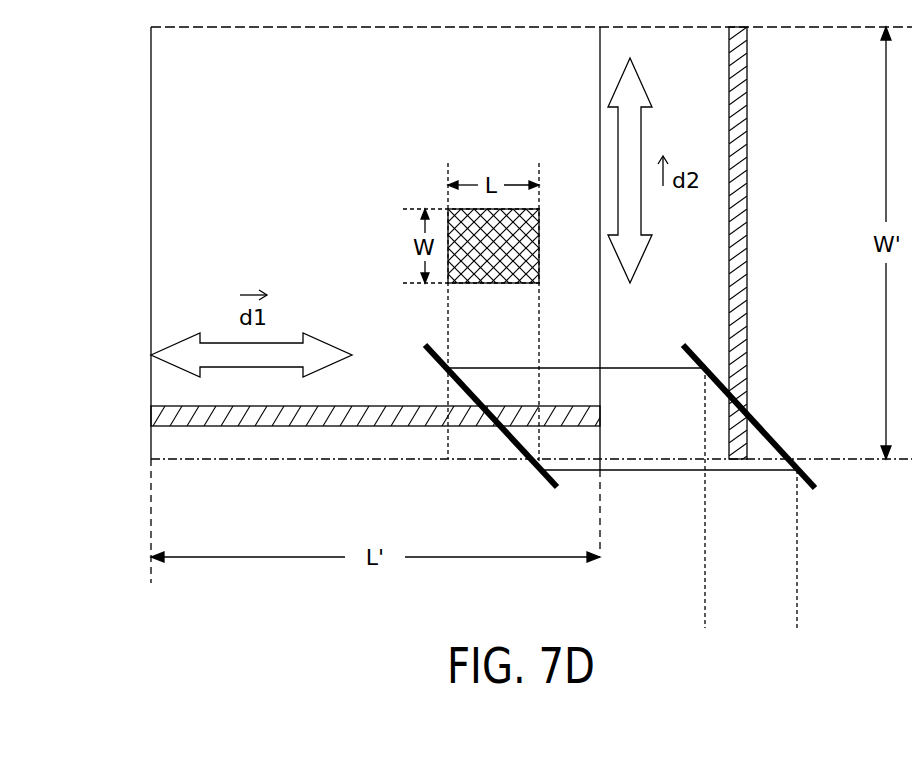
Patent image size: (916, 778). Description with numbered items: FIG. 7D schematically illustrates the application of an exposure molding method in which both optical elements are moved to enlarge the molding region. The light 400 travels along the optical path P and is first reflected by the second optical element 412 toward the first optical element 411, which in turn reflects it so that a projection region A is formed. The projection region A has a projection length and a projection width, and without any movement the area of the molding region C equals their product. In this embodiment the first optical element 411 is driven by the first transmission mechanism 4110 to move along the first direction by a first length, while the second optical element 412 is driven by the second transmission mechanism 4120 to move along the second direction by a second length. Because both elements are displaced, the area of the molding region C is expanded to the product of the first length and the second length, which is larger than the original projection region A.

The light 400 is at (797, 588).
The first optical element 411 is at (537, 473).
The second optical element 412 is at (770, 438).
The first transmission mechanism 4110 is at (158, 415).
The second transmission mechanism 4120 is at (742, 197).
The projection region A is at (532, 248).
The molding region C is at (178, 167).
The optical path P is at (649, 506).